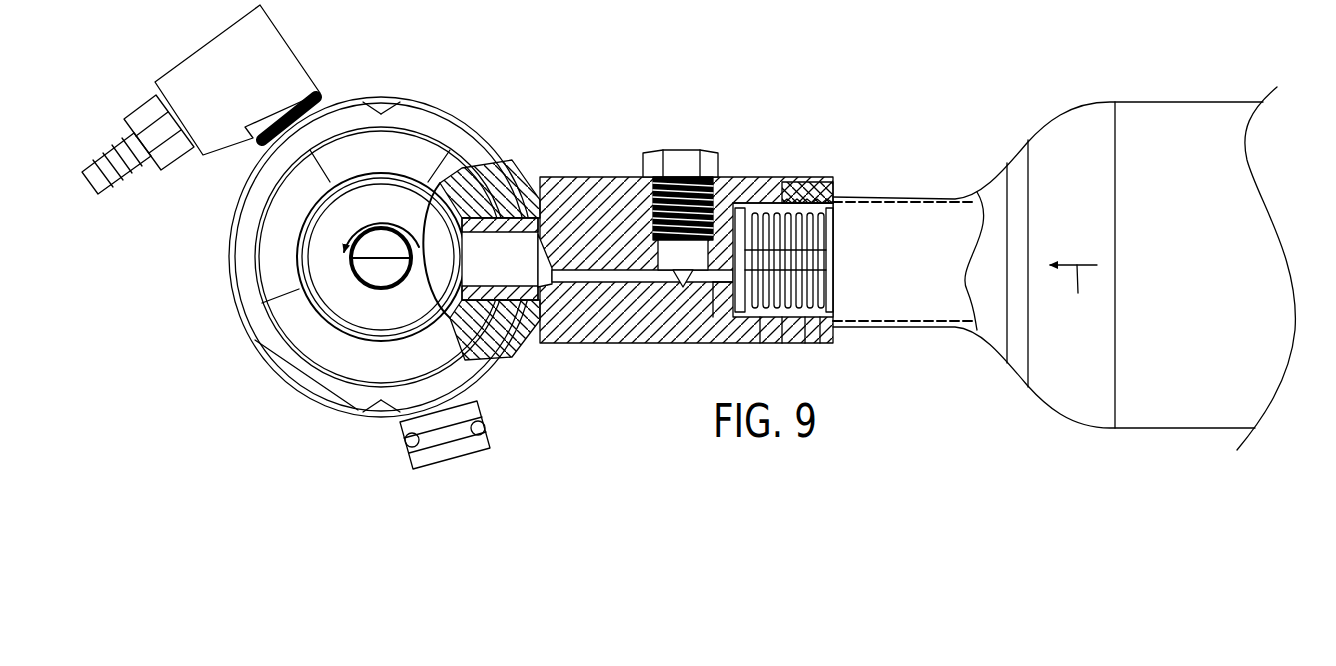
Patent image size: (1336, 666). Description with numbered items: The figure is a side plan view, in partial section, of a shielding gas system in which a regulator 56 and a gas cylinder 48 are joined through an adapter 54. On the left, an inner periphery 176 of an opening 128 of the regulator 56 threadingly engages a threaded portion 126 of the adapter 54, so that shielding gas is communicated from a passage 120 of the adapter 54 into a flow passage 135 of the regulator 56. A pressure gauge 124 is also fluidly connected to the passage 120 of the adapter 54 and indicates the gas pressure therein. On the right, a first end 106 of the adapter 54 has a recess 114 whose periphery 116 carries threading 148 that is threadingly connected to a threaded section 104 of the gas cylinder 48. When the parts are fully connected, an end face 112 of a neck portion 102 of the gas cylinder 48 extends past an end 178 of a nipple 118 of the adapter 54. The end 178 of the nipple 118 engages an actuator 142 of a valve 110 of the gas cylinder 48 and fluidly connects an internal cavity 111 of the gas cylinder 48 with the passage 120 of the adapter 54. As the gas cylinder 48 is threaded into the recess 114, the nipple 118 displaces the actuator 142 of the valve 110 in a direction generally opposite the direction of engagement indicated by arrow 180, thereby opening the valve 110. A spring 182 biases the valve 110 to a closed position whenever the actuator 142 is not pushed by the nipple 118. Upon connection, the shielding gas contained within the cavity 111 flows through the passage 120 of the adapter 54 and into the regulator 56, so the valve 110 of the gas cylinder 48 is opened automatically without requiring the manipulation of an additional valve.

The gas cylinder 48 is at (1200, 175).
The adapter 54 is at (733, 128).
The regulator 56 is at (458, 100).
The neck portion 102 is at (955, 172).
The threaded section 104 is at (833, 213).
The first end 106 is at (777, 160).
The valve 110 is at (778, 322).
The cavity 111 is at (964, 251).
The end face 112 is at (717, 322).
The recess 114 is at (820, 338).
The periphery 116 is at (820, 193).
The nipple 118 is at (688, 288).
The passage 120 is at (612, 284).
The pressure gauge 124 is at (681, 160).
The threaded portion 126 is at (500, 287).
The opening 128 is at (500, 210).
The flow passage 135 is at (78, 192).
The actuator 142 is at (832, 250).
The threading 148 is at (787, 183).
The inner periphery 176 is at (505, 302).
The end 178 is at (830, 272).
The arrow 180 is at (1073, 295).
The spring 182 is at (833, 292).